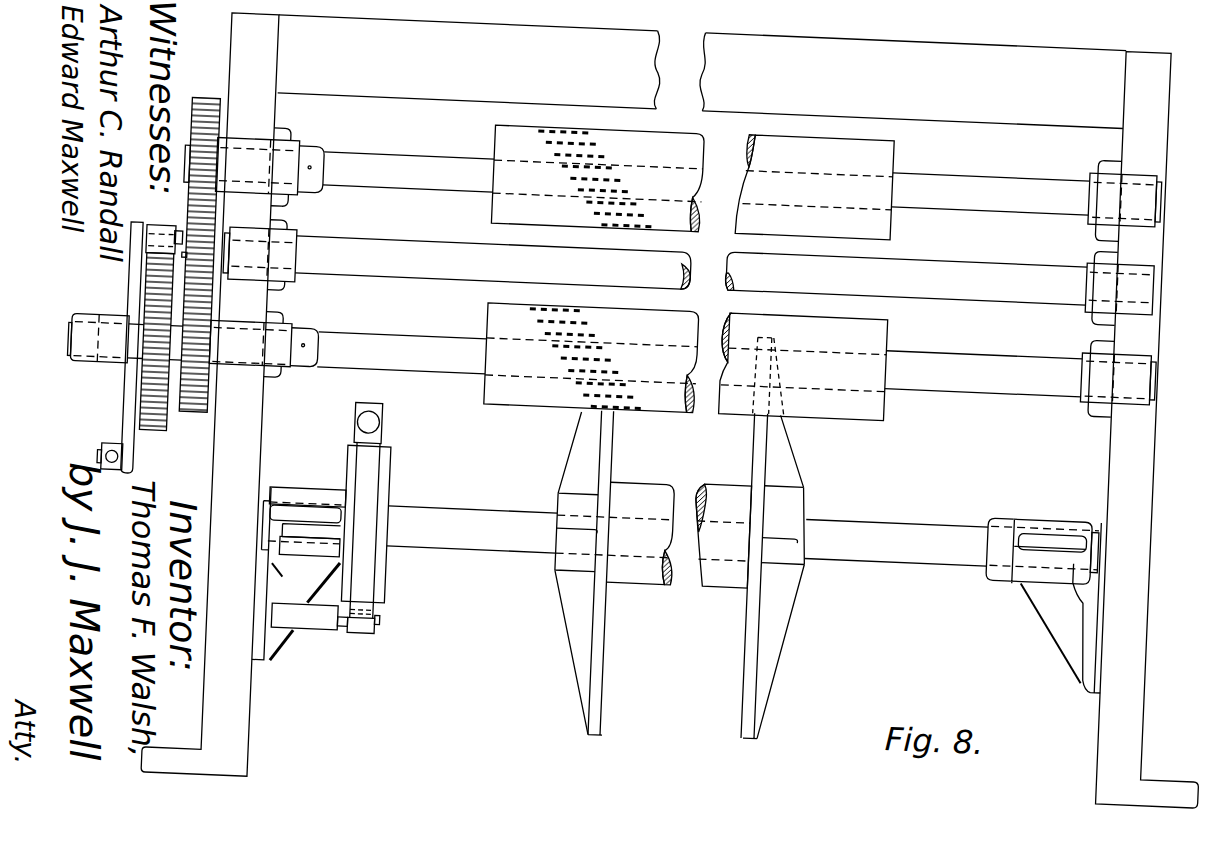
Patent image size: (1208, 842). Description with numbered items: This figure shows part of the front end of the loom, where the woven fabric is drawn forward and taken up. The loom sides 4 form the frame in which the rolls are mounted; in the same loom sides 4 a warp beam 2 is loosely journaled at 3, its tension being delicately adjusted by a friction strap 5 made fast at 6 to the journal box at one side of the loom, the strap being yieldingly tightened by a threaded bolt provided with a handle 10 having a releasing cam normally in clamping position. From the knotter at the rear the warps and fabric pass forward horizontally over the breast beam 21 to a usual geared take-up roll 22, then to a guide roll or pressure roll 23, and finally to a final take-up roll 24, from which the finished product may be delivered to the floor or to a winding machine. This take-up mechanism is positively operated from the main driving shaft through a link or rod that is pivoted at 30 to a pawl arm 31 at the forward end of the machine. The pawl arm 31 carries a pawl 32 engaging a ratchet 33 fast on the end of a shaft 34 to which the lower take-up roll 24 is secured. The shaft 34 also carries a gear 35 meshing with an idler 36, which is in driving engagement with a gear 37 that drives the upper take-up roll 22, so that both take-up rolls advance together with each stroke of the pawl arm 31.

The warp beam 2 is at (627, 720).
The journal 3 is at (745, 581).
The loom sides 4 is at (674, 413).
The friction strap 5 is at (410, 436).
The fastening of friction strap 6 is at (405, 615).
The handle 10 is at (399, 410).
The breast beam 21 is at (701, 72).
The geared take-up roll 22 is at (742, 184).
The guide roll or pressure roll 23 is at (724, 272).
The final take-up roll 24 is at (737, 364).
The pivot 30 is at (118, 461).
The pawl arm 31 is at (140, 403).
The pawl 32 is at (184, 236).
The ratchet 33 is at (166, 435).
The shaft 34 is at (84, 341).
The gear 35 is at (222, 340).
The idler 36 is at (156, 258).
The gear 37 is at (207, 98).